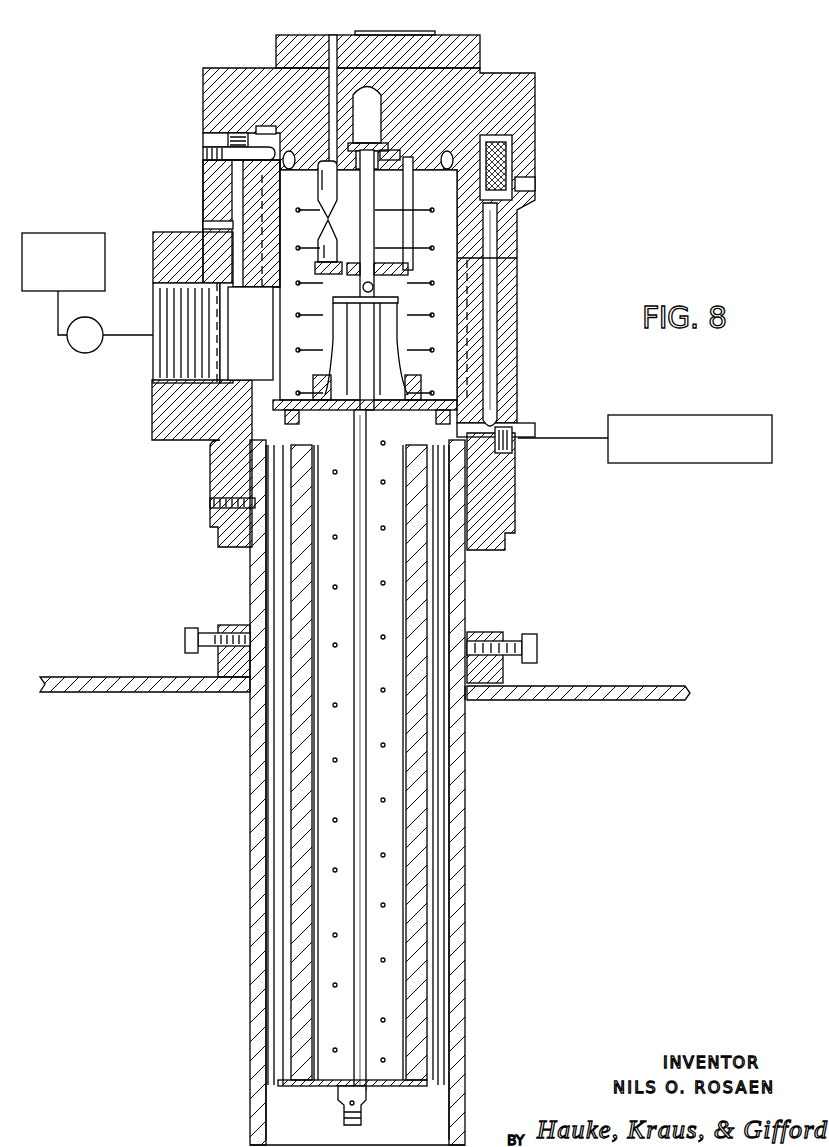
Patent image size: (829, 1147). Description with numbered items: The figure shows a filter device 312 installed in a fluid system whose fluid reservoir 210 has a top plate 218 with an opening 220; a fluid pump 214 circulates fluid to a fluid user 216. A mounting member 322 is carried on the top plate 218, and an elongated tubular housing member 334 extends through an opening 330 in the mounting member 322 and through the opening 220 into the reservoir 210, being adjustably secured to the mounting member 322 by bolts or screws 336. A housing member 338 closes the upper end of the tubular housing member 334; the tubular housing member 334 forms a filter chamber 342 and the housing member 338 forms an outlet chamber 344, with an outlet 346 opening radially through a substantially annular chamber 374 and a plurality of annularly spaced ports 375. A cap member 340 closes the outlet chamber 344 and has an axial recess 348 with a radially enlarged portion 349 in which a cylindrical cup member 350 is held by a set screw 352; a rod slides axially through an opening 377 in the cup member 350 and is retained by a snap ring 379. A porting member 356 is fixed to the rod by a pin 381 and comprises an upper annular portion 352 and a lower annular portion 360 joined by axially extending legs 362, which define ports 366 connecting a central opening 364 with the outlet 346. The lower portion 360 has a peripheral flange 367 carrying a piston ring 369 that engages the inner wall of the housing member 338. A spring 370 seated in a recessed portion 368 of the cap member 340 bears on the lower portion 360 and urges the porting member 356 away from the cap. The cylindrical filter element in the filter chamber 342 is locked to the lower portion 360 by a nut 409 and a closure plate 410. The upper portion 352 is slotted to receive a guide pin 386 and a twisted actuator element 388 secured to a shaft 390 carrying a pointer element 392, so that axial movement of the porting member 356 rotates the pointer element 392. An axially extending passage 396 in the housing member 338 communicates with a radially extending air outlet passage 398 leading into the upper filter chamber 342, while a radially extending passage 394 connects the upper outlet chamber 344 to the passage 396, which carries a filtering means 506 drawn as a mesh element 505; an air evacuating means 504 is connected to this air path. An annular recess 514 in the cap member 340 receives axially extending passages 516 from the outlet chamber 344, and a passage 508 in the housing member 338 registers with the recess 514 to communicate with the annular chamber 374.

The fluid reservoir 210 is at (554, 830).
The fluid pump 214 is at (82, 353).
The fluid user 216 is at (65, 233).
The top plate 218 is at (585, 686).
The opening 220 is at (466, 705).
The filter device 312 is at (520, 395).
The mounting member 322 is at (503, 636).
The opening 330 is at (465, 610).
The tubular housing member 334 is at (465, 1000).
The bolts or screws 336 is at (185, 641).
The housing member 338 is at (517, 315).
The cap member 340 is at (525, 116).
The filter chamber 342 is at (449, 895).
The outlet chamber 344 is at (505, 258).
The outlet 346 is at (160, 400).
The axial recess 348 is at (381, 110).
The radially enlarged portion 349 is at (376, 200).
The cup member 350 is at (388, 146).
The upper annular portion 352 is at (392, 160).
The porting member 356 is at (410, 366).
The lower annular portion 360 is at (302, 392).
The legs 362 is at (330, 330).
The central opening 364 is at (277, 490).
The ports 366 is at (333, 312).
The peripheral flange 367 is at (317, 488).
The recessed portion 368 is at (225, 178).
The piston ring 369 is at (455, 416).
The spring 370 is at (312, 205).
The annular chamber 374 is at (235, 395).
The ports 375 is at (262, 300).
The opening 377 is at (338, 182).
The snap ring 379 is at (362, 143).
The pin 381 is at (373, 287).
The guide pin 386 is at (412, 210).
The actuator element 388 is at (318, 264).
The shaft 390 is at (340, 40).
The pointer element 392 is at (300, 52).
The radially extending passage 394 is at (535, 185).
The axially extending passage 396 is at (497, 352).
The air outlet passage 398 is at (512, 450).
The nut 409 is at (367, 1098).
The bottom plate 410 is at (330, 1088).
The air evacuating means 504 is at (648, 420).
The filter 505 is at (512, 160).
The filtering means 506 is at (352, 222).
The passage 508 is at (208, 152).
The annular recess 514 is at (268, 130).
The axially extending passages 516 is at (290, 170).